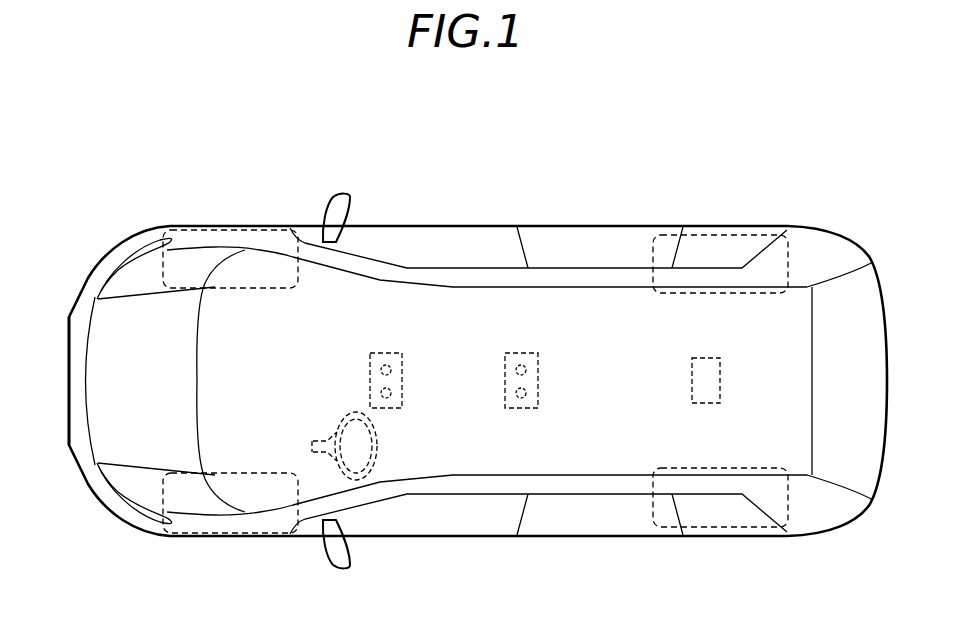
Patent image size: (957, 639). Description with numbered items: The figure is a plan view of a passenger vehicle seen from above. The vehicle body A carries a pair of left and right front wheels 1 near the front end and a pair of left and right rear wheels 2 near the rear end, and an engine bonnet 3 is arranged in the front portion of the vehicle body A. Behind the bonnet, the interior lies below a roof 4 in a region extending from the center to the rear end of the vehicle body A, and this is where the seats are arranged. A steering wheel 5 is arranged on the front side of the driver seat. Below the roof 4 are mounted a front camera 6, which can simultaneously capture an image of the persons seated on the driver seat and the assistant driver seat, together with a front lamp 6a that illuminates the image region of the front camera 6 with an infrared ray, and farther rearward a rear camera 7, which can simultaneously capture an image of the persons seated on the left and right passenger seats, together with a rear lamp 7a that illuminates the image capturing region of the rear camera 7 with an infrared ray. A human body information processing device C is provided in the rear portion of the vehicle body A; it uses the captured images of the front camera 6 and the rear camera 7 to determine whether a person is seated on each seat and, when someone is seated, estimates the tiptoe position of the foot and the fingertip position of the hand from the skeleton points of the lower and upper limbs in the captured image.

The vehicle body A is at (488, 227).
The front wheels 1 is at (234, 226).
The rear wheels 2 is at (718, 230).
The engine bonnet 3 is at (100, 390).
The roof 4 is at (590, 325).
The steering wheel 5 is at (350, 412).
The front camera 6 is at (399, 384).
The front lamp 6a is at (397, 408).
The rear camera 7 is at (522, 386).
The rear lamp 7a is at (520, 408).
The human body information processing device C is at (692, 378).